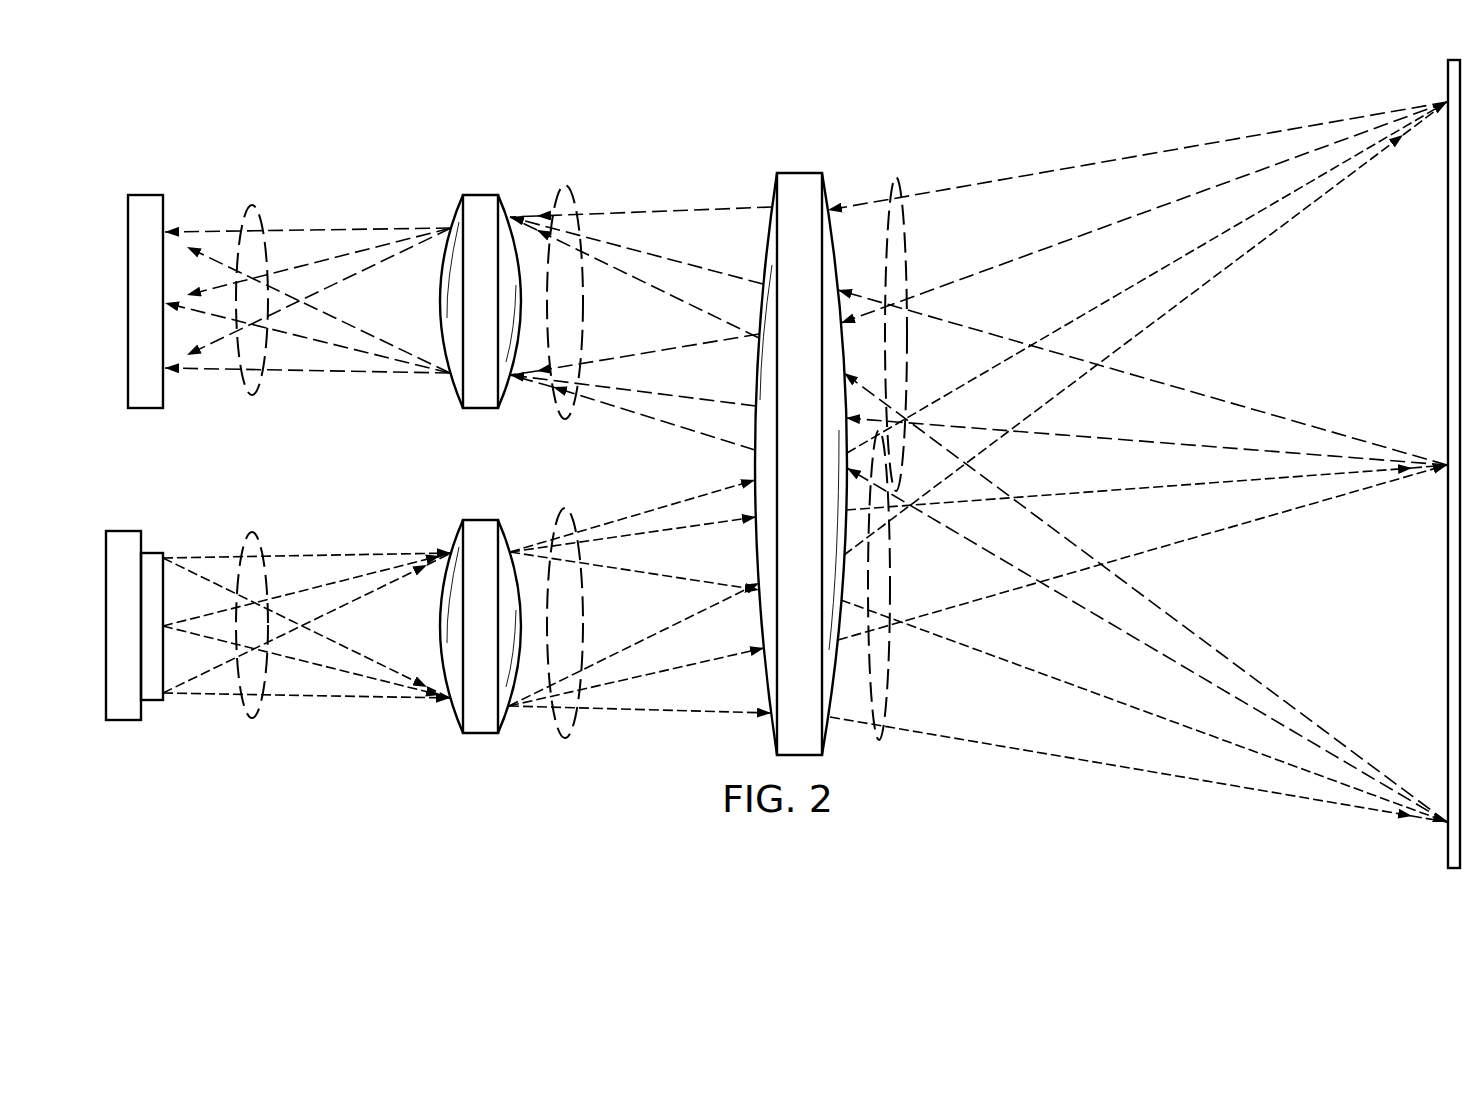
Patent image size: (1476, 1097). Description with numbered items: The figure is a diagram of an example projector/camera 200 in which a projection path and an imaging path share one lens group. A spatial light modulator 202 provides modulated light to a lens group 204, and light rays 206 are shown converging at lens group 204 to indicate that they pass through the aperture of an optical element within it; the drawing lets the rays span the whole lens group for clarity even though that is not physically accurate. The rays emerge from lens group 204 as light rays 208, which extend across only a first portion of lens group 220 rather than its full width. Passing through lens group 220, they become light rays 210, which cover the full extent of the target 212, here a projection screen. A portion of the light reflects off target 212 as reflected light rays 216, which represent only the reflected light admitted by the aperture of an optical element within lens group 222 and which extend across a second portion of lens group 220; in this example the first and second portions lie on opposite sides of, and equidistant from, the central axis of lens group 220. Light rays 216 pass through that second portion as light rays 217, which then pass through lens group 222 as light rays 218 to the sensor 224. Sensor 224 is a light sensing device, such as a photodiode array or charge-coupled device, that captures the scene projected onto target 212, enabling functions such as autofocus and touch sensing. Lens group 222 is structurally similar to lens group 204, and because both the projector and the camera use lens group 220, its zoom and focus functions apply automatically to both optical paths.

The projector/camera 200 is at (346, 117).
The spatial light modulator 202 is at (124, 720).
The lens group 204 is at (481, 733).
The light rays 206 is at (251, 718).
The light rays 208 is at (562, 738).
The light rays 210 is at (880, 740).
The target 212 is at (1448, 318).
The reflected light rays 216 is at (897, 178).
The light rays 217 is at (566, 186).
The light rays 218 is at (250, 207).
The lens group 220 is at (800, 173).
The lens group 222 is at (480, 195).
The sensor 224 is at (150, 195).